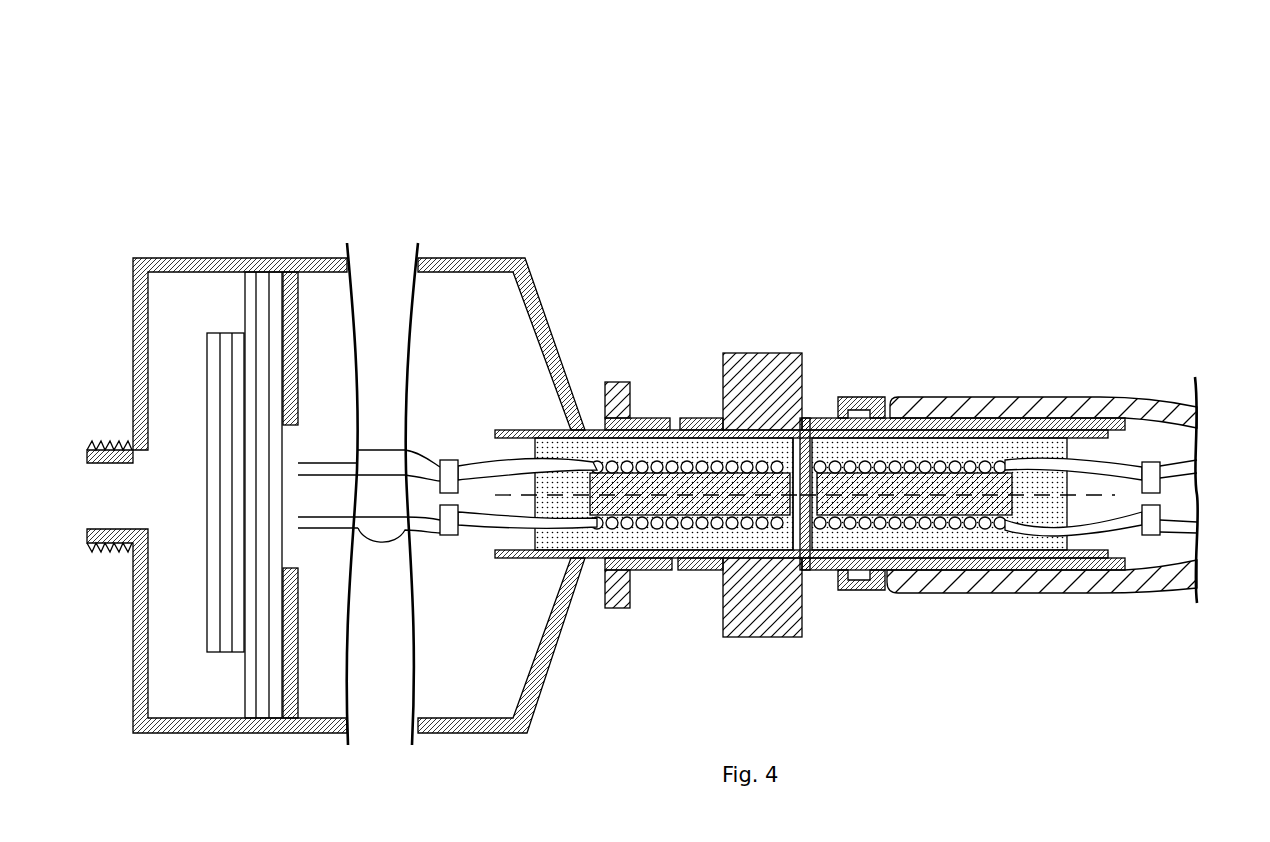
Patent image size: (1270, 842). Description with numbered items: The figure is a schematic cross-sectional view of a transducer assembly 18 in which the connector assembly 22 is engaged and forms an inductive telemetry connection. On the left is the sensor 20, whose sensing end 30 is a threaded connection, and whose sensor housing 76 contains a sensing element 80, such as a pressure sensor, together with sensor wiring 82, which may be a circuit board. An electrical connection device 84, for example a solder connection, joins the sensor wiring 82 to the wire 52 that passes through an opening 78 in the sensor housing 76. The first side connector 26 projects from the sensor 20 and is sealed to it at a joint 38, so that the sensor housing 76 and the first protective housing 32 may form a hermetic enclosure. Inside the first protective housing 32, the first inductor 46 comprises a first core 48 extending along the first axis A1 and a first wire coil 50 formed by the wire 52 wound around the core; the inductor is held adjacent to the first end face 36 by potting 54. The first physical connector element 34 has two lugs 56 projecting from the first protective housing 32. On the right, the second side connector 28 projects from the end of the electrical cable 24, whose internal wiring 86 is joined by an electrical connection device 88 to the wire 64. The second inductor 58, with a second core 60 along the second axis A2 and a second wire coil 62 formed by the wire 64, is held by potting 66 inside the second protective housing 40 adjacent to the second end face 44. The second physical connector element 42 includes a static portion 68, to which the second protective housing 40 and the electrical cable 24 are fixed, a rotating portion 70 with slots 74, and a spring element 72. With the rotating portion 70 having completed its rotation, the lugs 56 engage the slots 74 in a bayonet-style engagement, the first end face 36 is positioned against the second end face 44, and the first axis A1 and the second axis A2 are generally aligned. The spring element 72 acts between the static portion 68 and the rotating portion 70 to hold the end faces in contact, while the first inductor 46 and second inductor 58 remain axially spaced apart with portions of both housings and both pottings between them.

The transducer assembly 18 is at (378, 162).
The sensor 20 is at (344, 497).
The connector assembly 22 is at (810, 274).
The electrical cable 24 is at (1112, 392).
The first side connector 26 is at (770, 566).
The second side connector 28 is at (868, 597).
The sensing end 30 is at (108, 441).
The first protective housing 32 is at (755, 426).
The first physical connector element 34 is at (664, 414).
The first end face 36 is at (808, 446).
The joint 38 is at (592, 428).
The second protective housing 40 is at (923, 429).
The second physical connector element 42 is at (777, 639).
The second end face 44 is at (805, 508).
The first inductor 46 is at (725, 578).
The first core 48 is at (795, 510).
The first wire coil 50 is at (640, 524).
The wire 52 is at (480, 462).
The potting 54 is at (500, 558).
The lugs 56 is at (676, 418).
The second inductor 58 is at (935, 534).
The second core 60 is at (1013, 507).
The second wire coil 62 is at (962, 528).
The wire 64 is at (1113, 465).
The potting 66 is at (1072, 447).
The static portion 68 is at (1140, 570).
The rotating portion 70 is at (741, 351).
The spring element 72 is at (857, 397).
The slots 74 is at (691, 418).
The sensor housing 76 is at (162, 738).
The opening 78 is at (570, 427).
The sensing element 80 is at (230, 333).
The sensor wiring 82 is at (358, 450).
The electrical connection device 84 is at (448, 460).
The internal wiring 86 is at (1203, 540).
The electrical connection device 88 is at (1163, 465).
The first axis A1 is at (518, 497).
The second axis A2 is at (1077, 497).